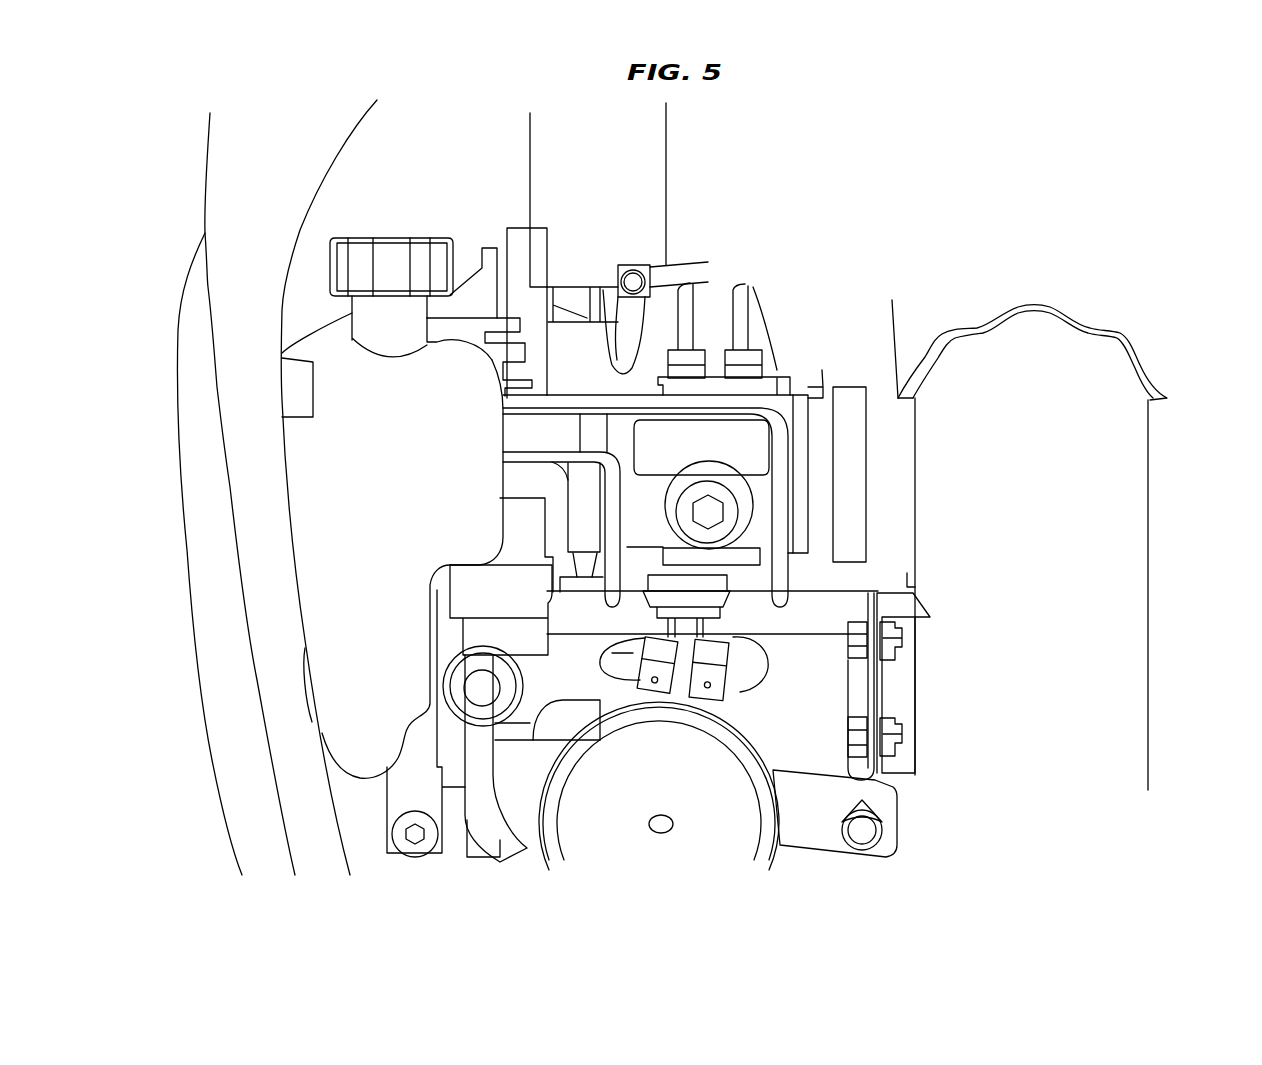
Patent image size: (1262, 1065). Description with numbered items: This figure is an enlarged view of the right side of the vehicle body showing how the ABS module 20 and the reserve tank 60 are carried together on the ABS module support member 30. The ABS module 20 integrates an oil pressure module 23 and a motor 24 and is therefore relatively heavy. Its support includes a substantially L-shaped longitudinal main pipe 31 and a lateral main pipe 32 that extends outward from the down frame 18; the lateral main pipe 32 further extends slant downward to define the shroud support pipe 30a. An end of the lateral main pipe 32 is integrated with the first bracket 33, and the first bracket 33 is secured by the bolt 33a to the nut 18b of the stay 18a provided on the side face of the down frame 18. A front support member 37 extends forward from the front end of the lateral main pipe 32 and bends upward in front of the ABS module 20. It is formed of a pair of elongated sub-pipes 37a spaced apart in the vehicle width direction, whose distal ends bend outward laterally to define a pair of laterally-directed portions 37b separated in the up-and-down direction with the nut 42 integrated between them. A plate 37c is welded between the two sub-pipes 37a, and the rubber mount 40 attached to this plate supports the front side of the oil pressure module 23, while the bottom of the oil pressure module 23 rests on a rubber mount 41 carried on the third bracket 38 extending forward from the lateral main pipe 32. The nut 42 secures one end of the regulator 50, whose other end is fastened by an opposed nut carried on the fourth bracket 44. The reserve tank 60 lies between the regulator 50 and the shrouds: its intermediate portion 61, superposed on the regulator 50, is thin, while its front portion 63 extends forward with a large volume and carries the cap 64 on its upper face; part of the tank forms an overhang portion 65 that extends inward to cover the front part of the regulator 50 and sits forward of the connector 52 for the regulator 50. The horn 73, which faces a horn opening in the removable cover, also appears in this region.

The down frame 18 is at (1133, 515).
The stay 18a is at (880, 707).
The nut 18b is at (903, 636).
The ABS module 20 is at (884, 373).
The oil pressure module 23 is at (795, 410).
The motor 24 is at (582, 498).
The ABS module support member 30 is at (578, 647).
The shroud support pipe 30a is at (397, 790).
The longitudinal main pipe 31 is at (517, 228).
The lateral main pipe 32 is at (774, 637).
The first bracket 33 is at (863, 673).
The bolt 33a is at (848, 639).
The front support member 37 is at (760, 537).
The sub-pipes 37a is at (780, 458).
The laterally-directed portions 37b is at (569, 394).
The plate 37c is at (626, 430).
The third bracket 38 is at (575, 637).
The rubber mount 40 is at (748, 510).
The rubber mount 41 is at (745, 623).
The nut 42 is at (527, 434).
The fourth bracket 44 is at (462, 328).
The regulator 50 is at (467, 320).
The connector 52 is at (433, 593).
The reserve tank 60 is at (283, 336).
The intermediate portion 61 is at (568, 322).
The front portion 63 is at (297, 438).
The cap 64 is at (401, 236).
The overhang portion 65 is at (480, 368).
The horn 73 is at (692, 833).